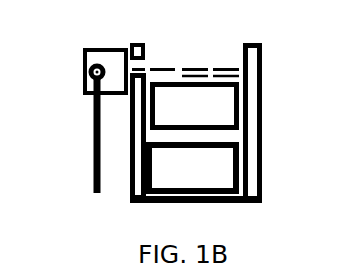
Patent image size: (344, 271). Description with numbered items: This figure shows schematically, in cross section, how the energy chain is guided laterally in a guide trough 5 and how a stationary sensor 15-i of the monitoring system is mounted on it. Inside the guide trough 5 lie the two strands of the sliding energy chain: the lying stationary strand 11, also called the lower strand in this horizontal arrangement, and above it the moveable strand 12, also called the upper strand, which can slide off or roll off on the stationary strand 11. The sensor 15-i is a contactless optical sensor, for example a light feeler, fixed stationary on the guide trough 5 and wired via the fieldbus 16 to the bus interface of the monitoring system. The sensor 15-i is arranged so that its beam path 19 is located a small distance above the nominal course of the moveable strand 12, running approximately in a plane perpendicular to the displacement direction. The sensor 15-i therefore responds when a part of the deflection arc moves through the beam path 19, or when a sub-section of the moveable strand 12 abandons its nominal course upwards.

The sensor 15-i is at (80, 62).
The fieldbus 16 is at (93, 130).
The beam path 19 is at (194, 62).
The guide trough 5 is at (222, 195).
The moveable strand 12 is at (205, 112).
The stationary strand 11 is at (209, 172).